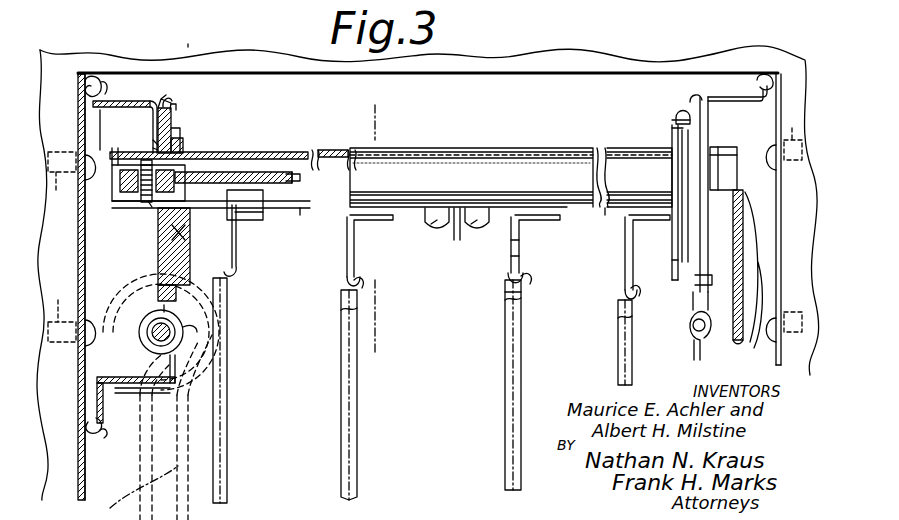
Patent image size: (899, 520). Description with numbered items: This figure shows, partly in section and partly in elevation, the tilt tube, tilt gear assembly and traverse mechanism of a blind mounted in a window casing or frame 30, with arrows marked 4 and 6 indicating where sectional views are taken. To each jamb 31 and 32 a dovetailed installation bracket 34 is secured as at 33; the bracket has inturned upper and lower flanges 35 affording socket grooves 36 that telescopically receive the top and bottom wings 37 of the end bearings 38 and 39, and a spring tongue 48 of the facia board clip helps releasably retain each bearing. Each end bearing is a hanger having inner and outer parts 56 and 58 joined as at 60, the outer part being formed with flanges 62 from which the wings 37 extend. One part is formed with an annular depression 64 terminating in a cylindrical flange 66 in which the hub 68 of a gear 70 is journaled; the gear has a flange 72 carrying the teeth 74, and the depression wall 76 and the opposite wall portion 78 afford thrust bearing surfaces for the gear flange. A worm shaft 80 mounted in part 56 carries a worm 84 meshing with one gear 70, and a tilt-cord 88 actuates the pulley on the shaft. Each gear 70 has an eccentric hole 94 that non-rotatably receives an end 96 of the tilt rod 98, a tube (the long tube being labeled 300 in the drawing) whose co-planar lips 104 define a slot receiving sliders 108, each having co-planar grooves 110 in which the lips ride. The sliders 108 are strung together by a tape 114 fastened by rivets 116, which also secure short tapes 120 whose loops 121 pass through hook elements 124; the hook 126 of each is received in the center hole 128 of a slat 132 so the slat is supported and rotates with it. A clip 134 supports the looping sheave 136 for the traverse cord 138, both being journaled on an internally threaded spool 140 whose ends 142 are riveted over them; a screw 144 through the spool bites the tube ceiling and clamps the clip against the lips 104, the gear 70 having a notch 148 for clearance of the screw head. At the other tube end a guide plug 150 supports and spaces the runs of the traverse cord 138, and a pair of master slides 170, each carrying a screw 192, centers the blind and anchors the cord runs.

The section line 4- 4 is at (375, 110).
The section line 6- 6 is at (166, 32).
The window casing or frame 30 is at (126, 53).
The jamb 31 is at (85, 479).
The jamb 32 is at (785, 366).
The fastening 33 is at (427, 227).
The dovetailed installation bracket 34 is at (76, 104).
The inturned upper and lower flanges 35 is at (104, 82).
The socket grooves 36 is at (81, 84).
The top and bottom wings 37 is at (81, 118).
The end bearing 38 is at (185, 116).
The end bearing 39 is at (677, 105).
The spring tongue 48 is at (785, 263).
The inner part 56 is at (166, 100).
The outer part 58 is at (109, 378).
The joint 60 is at (676, 125).
The flanges 62 is at (148, 101).
The annular depression 64 is at (166, 108).
The cylindrical flange 66 is at (174, 135).
The hub 68 is at (175, 151).
The gear 70 is at (158, 253).
The flange 72 is at (158, 145).
The teeth 74 is at (160, 315).
The depression wall 76 is at (173, 121).
The opposite wall portion 78 is at (149, 117).
The worm shaft 80 is at (186, 326).
The worm 84 is at (183, 337).
The tilt-cord 88 is at (134, 490).
The eccentric hole 94 is at (291, 153).
The ends of tilt rod 96 is at (116, 162).
The tilt rod 98 is at (331, 150).
The co-planar lips 104 is at (207, 205).
The sliders 108 is at (269, 209).
The co-planar grooves 110 is at (237, 241).
The tape 114 is at (303, 217).
The rivets 116 is at (373, 220).
The relatively short tapes 120 is at (529, 239).
The loops 121 is at (531, 253).
The hook elements 124 is at (509, 277).
The hook 126 is at (523, 285).
The center hole 128 is at (521, 297).
The slat 132 is at (357, 397).
The clip 134 is at (139, 201).
The looping sheave 136 is at (127, 194).
The traverse cord 138 is at (270, 179).
The internally threaded spool 140 is at (164, 184).
The ends of spool 142 is at (176, 177).
The screw 144 is at (156, 229).
The notch 148 is at (191, 241).
The guide plug 150 is at (743, 159).
The master slides 170 is at (458, 240).
The screw 192 is at (434, 229).
The head channel 300 is at (495, 190).